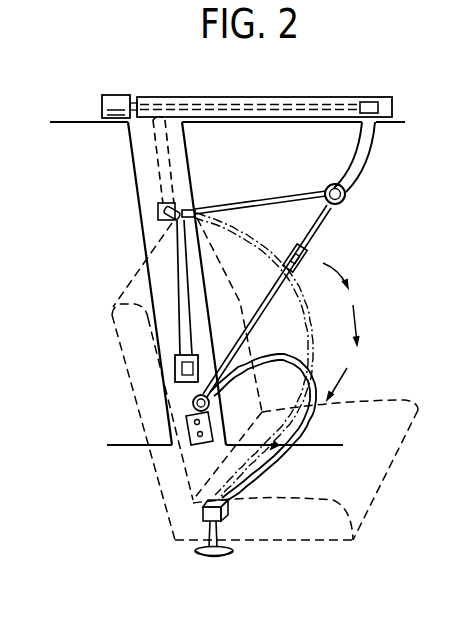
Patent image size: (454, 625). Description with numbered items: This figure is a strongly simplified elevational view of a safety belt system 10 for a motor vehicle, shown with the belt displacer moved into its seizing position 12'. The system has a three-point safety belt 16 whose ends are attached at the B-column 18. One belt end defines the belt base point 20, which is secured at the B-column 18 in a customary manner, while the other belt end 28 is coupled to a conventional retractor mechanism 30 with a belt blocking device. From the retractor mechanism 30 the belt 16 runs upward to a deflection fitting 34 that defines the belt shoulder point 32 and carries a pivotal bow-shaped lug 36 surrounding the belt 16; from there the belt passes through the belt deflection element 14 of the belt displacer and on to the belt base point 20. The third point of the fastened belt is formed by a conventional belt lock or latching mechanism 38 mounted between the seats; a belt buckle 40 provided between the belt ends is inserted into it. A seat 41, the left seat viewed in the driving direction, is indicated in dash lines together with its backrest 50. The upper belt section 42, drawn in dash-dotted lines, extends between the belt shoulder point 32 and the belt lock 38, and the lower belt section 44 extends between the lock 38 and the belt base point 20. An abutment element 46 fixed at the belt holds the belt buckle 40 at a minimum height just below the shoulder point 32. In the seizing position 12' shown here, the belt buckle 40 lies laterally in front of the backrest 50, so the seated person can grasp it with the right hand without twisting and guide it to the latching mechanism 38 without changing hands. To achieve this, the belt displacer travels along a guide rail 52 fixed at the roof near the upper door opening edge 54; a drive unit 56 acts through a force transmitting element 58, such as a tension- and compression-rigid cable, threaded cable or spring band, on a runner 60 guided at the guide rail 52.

The safety belt system 10 is at (343, 88).
The seizing position of the belt displacer 12' is at (382, 157).
The belt deflection element 14 is at (347, 200).
The three-point safety belt 16 is at (319, 240).
The B-column 18 is at (198, 289).
The belt base point 20 is at (182, 410).
The other belt end 28 is at (180, 340).
The retractor mechanism 30 is at (172, 376).
The belt shoulder point 32 is at (158, 225).
The bracket 34 is at (158, 210).
The pivotal bow-shaped lug 36 is at (195, 209).
The belt lock or latching mechanism 38 is at (233, 520).
The belt buckle 40 is at (302, 257).
The seat 41 is at (409, 404).
The upper belt section 42 is at (270, 203).
The lower belt section 44 is at (327, 216).
The abutment element 46 is at (290, 247).
The backrest 50 is at (110, 333).
The guide rail 52 is at (262, 98).
The upper door opening edge 54 is at (248, 123).
The drive unit 56 is at (117, 96).
The force transmitting element 58 is at (191, 103).
The runner 60 is at (378, 100).